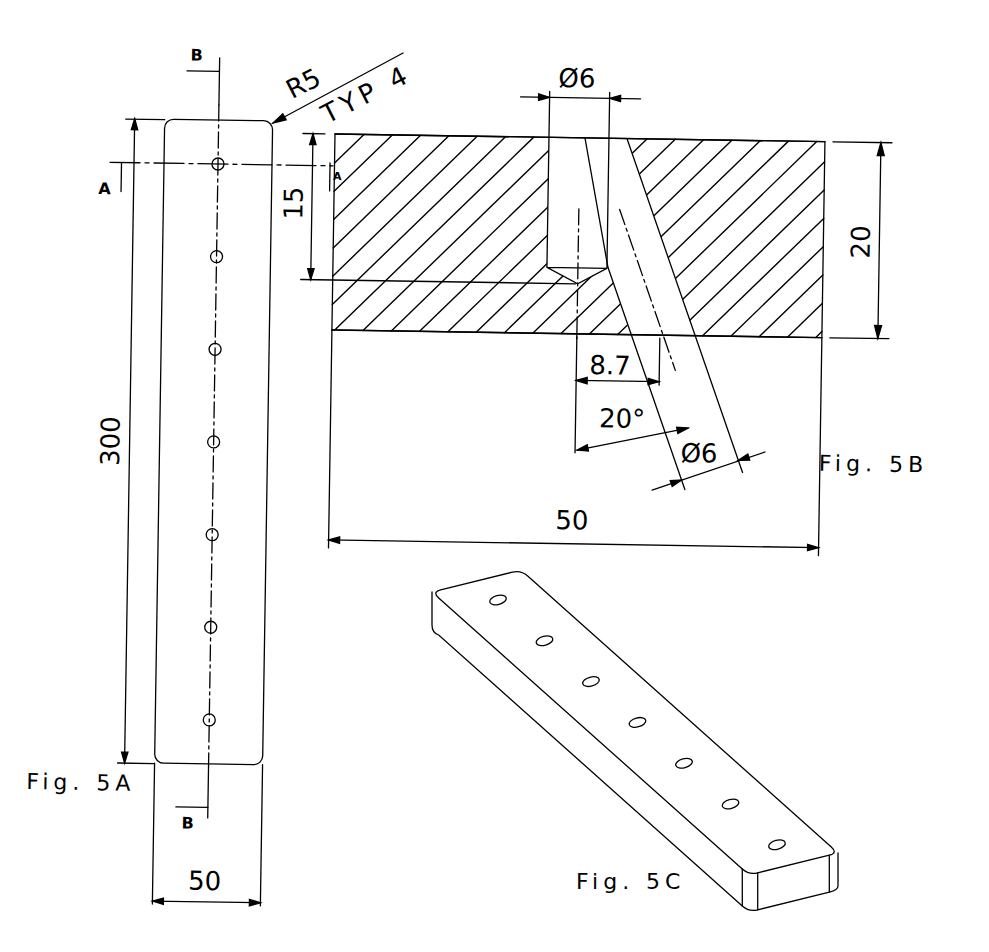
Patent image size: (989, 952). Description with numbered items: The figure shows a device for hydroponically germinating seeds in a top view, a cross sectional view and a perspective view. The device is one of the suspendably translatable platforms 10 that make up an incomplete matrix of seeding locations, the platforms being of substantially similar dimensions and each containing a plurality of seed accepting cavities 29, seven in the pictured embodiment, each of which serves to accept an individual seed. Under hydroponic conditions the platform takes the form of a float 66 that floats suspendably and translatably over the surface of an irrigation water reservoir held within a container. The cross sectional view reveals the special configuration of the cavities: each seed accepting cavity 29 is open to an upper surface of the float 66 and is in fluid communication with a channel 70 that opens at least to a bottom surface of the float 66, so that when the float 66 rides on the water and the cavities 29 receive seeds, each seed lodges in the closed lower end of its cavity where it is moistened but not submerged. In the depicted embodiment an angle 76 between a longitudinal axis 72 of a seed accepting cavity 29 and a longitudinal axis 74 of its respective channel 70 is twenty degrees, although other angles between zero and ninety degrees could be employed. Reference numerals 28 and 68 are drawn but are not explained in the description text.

In FIG. 5A, the suspendably translatable platform 10 is at (272, 683).
In FIG. 5B, the suspendably translatable platform 10 is at (802, 332).
In FIG. 5C, the suspendably translatable platform 10 is at (698, 725).
In FIG. 5A, the hole 28 is at (222, 540).
In FIG. 5B, the hole 28 is at (553, 170).
In FIG. 5C, the hole 28 is at (599, 680).
In FIG. 5A, the seed accepting cavity 29 is at (282, 586).
In FIG. 5B, the seed accepting cavity 29 is at (564, 166).
In FIG. 5C, the seed accepting cavity 29 is at (673, 662).
In FIG. 5B, the float 66 is at (713, 133).
In FIG. 5B, the bottom surface of bar 68 is at (381, 331).
In FIG. 5B, the channel 70 is at (559, 254).
In FIG. 5B, the longitudinal axis of seed accepting cavity 72 is at (578, 360).
In FIG. 5B, the longitudinal axis of channel 74 is at (689, 397).
In FIG. 5B, the angle 76 is at (580, 446).